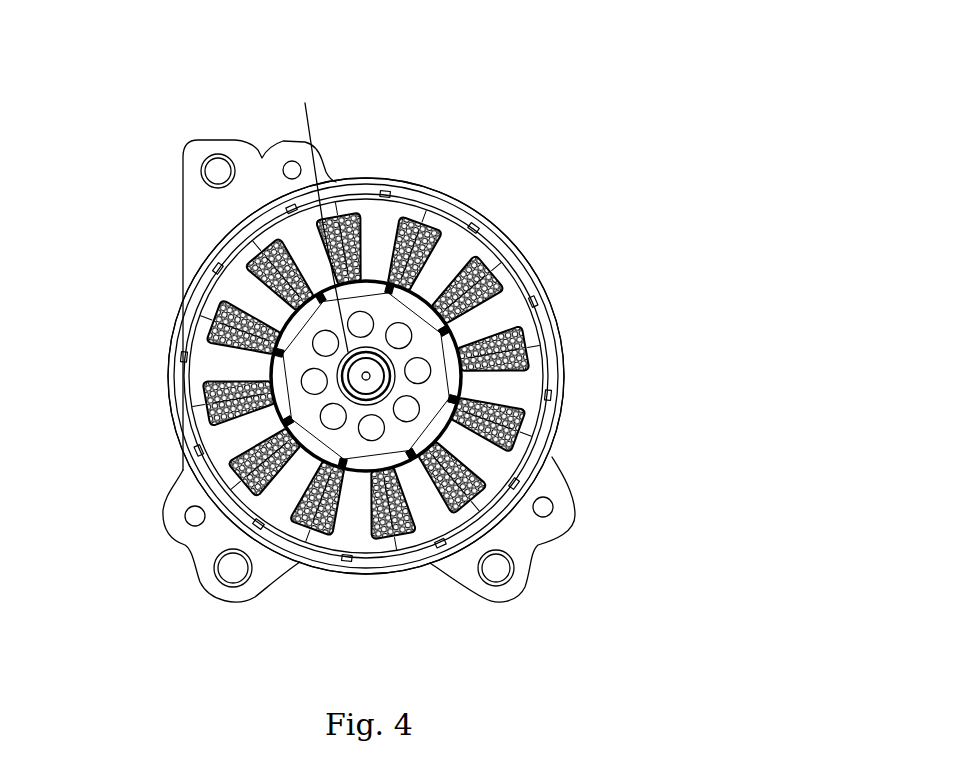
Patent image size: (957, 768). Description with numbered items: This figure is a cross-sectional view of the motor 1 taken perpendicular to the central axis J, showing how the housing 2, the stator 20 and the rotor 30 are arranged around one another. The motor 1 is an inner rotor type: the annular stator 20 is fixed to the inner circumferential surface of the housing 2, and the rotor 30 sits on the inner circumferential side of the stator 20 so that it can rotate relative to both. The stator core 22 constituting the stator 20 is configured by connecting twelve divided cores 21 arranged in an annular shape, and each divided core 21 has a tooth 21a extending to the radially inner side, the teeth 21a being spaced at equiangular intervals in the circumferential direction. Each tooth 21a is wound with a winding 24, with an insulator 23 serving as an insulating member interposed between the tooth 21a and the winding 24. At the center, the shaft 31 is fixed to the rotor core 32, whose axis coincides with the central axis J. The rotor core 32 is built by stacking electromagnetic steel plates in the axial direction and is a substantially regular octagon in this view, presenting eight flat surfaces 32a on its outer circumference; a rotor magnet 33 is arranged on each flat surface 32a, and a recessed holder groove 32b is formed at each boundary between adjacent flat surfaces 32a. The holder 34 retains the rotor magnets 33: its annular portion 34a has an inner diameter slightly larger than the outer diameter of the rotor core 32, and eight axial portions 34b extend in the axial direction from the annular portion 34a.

The motor 1 is at (548, 240).
The housing 2 is at (547, 303).
The stator 20 is at (184, 426).
The stator core 22 is at (184, 426).
The divided core 21 is at (450, 258).
The tooth 21a is at (450, 258).
The insulator 23 is at (427, 228).
The winding 24 is at (408, 226).
The rotor 30 is at (277, 313).
The shaft 31 is at (368, 346).
The rotor core 32 is at (283, 360).
The flat surface 32a is at (258, 485).
The holder groove 32b is at (447, 393).
The rotor magnet 33 is at (346, 463).
The holder 34 is at (440, 432).
The annular portion 34a is at (440, 432).
The axial portion 34b is at (460, 393).
The central axis J is at (318, 211).